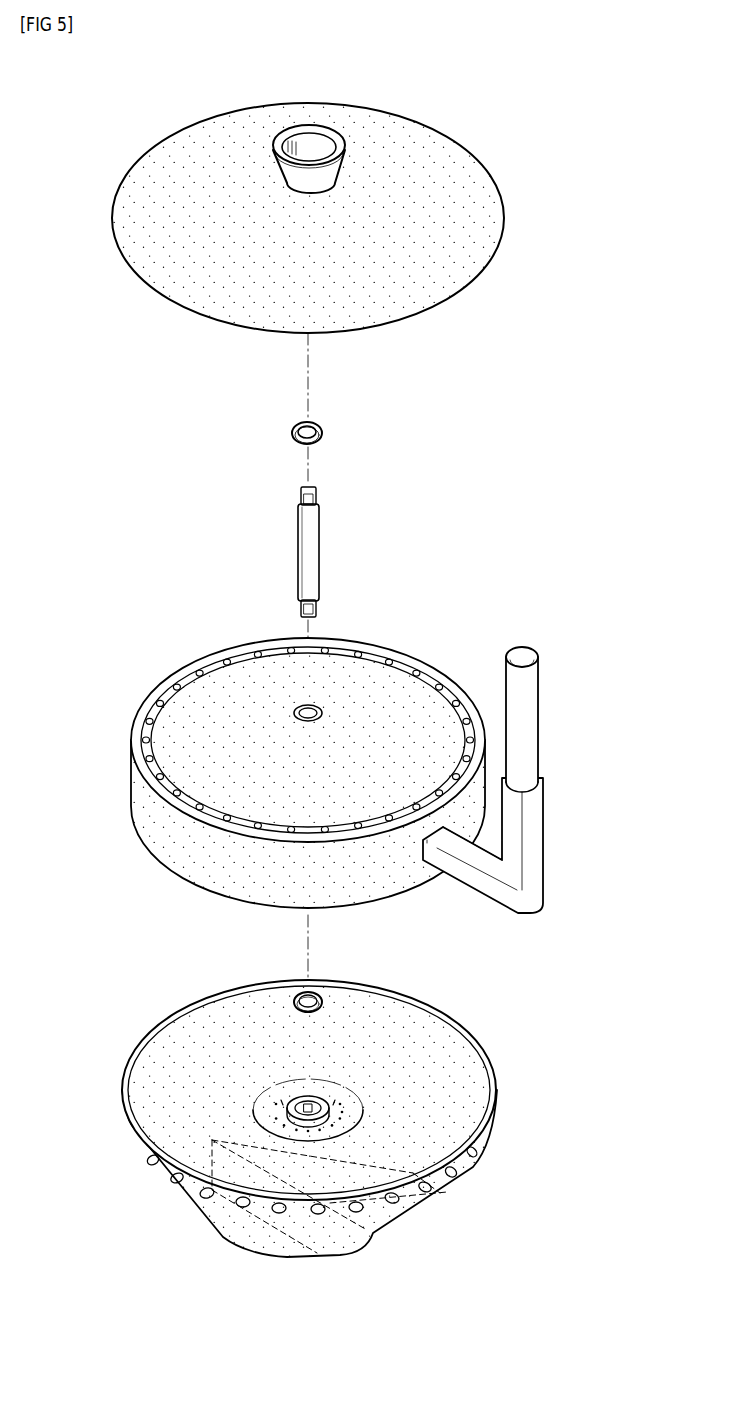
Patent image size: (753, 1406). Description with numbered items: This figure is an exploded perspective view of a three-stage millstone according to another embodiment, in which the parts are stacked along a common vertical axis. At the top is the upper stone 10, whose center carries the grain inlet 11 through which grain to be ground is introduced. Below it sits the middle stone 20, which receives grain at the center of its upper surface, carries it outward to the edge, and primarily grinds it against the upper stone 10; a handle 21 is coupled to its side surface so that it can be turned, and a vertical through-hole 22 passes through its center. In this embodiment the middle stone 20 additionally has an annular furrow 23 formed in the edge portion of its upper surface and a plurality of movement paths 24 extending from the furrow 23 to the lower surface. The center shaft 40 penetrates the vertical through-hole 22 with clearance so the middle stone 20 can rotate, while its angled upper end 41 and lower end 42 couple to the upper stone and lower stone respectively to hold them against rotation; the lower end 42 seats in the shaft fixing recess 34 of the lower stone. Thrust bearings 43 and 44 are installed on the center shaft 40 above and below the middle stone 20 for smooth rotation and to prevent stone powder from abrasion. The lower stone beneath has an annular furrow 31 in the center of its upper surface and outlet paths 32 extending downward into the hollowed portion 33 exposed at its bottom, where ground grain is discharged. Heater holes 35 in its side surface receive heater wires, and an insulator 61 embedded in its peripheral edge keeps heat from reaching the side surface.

The upper stone 10 is at (418, 142).
The grain inlet 11 is at (315, 149).
The middle stone 20 is at (275, 755).
The handle 21 is at (534, 807).
The vertical through-hole 22 is at (296, 712).
The annular furrow 23 is at (427, 682).
The movement paths 24 is at (380, 657).
The annular furrow 31 is at (343, 1110).
The outlet paths 32 is at (365, 1120).
The hollowed portion 33 is at (312, 1233).
The shaft fixing recess 34 is at (253, 1110).
The heater holes 35 is at (397, 1203).
The center shaft 40 is at (281, 551).
The upper end 41 is at (300, 497).
The lower end 42 is at (300, 610).
The thrust bearing 43 is at (322, 433).
The thrust bearing 44 is at (322, 1000).
The insulator 61 is at (162, 1022).